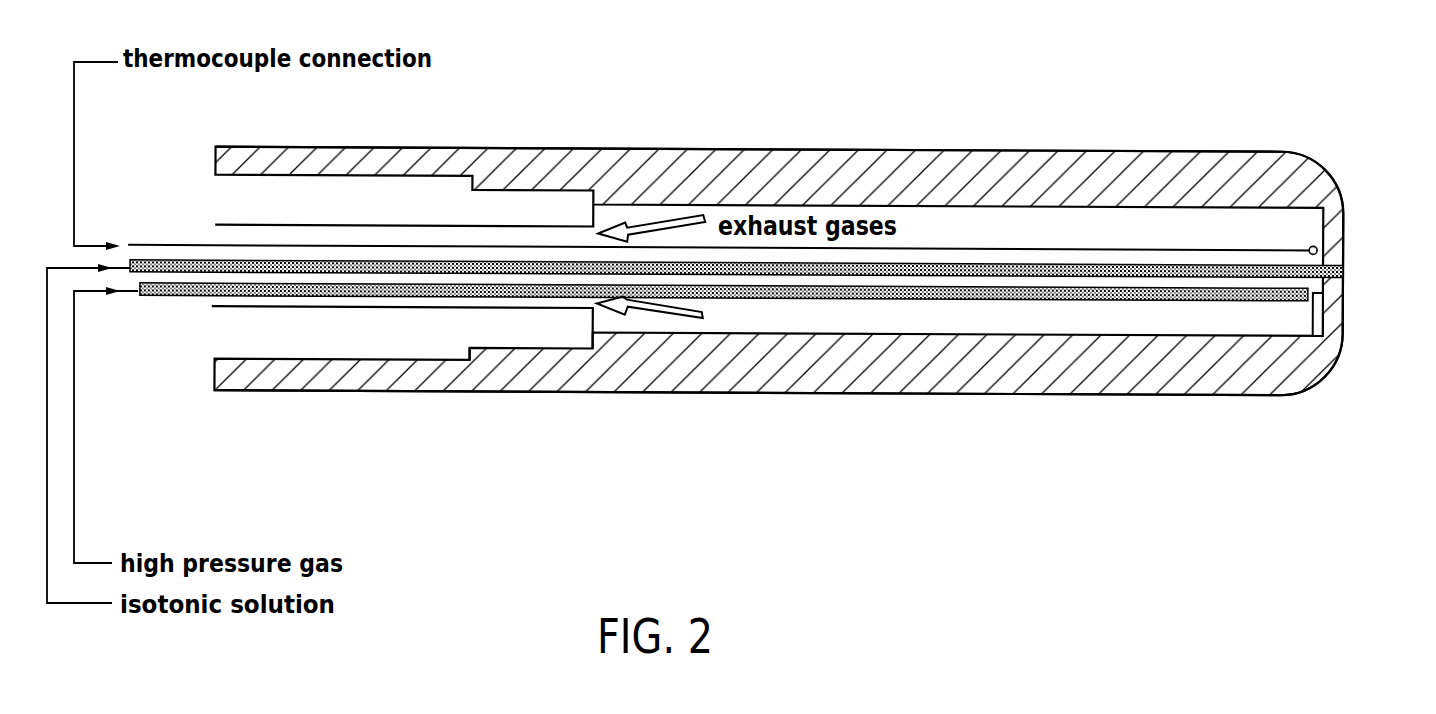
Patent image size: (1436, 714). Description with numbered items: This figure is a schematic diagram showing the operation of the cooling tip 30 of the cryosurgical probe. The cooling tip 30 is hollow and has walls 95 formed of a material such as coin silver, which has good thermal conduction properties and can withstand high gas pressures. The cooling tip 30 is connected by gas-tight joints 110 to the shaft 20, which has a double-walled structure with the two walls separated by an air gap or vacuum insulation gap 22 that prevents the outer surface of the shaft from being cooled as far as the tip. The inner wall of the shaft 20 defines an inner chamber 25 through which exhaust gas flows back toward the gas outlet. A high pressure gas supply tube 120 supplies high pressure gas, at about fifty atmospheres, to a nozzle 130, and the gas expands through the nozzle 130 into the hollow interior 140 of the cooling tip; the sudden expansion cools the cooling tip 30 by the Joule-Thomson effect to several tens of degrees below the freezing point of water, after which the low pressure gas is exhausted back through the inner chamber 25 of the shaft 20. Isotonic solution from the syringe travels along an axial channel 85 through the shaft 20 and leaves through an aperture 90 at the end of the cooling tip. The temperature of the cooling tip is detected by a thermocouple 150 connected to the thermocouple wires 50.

The shaft 20 is at (330, 393).
The vacuum insulation gap 22 is at (339, 217).
The inner chamber 25 is at (213, 237).
The cooling tip 30 is at (720, 110).
The thermocouple wires 50 is at (1105, 246).
The axial channel 85 is at (190, 276).
The aperture 90 is at (1344, 270).
The walls 95 is at (898, 148).
The gas-tight joints 110 is at (474, 371).
The high pressure gas supply tube 120 is at (1047, 292).
The nozzle 130 is at (1316, 333).
The hollow interior 140 is at (813, 318).
The thermocouple 150 is at (1313, 245).